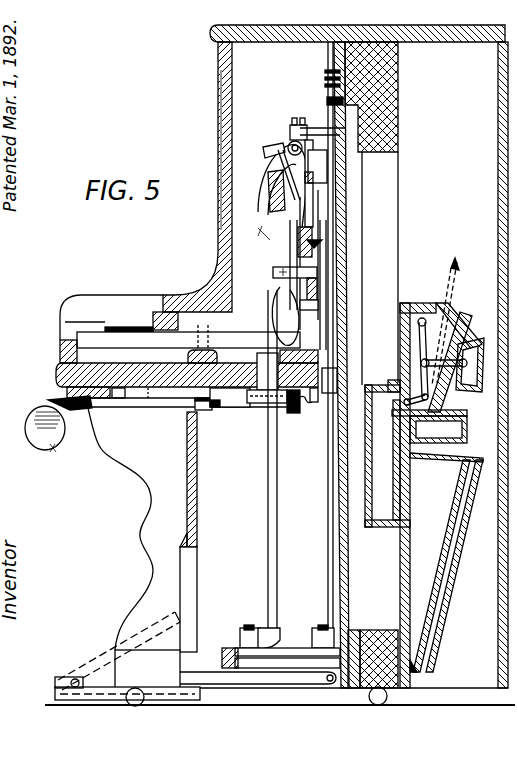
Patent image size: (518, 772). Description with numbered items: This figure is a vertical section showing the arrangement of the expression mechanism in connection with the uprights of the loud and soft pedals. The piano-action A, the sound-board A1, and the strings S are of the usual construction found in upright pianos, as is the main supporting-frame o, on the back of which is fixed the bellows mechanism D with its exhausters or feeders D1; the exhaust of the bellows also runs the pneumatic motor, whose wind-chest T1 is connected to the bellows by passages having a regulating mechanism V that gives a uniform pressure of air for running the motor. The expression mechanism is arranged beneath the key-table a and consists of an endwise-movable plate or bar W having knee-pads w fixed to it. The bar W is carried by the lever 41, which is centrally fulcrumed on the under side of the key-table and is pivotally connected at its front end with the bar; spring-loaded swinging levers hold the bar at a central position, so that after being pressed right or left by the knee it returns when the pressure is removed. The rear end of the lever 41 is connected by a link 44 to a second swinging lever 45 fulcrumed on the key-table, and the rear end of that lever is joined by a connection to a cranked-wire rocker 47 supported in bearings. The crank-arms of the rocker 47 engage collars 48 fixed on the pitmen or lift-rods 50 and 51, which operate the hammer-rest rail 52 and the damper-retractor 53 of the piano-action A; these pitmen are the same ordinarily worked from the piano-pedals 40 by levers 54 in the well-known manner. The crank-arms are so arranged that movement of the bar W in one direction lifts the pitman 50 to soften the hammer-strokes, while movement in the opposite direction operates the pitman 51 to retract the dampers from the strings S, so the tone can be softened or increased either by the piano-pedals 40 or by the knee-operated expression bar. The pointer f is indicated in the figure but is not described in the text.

The piano-pedals 40 is at (201, 659).
The lever 41 is at (160, 400).
The link 44 is at (199, 525).
The second swinging lever 45 is at (270, 397).
The cranked-wire rocker 47 is at (314, 405).
The collars 48 is at (338, 378).
The pitman or lift-rod 50 is at (268, 507).
The pitman or lift-rod 51 is at (328, 507).
The hammer-rest rail 52 is at (268, 190).
The damper-retractor 53 is at (322, 244).
The levers 54 is at (276, 630).
The bar K is at (180, 344).
The key-table a is at (187, 370).
The expression bar W is at (67, 389).
The knee-pads w is at (45, 436).
The piano-action A is at (280, 282).
The sound-board A1 is at (342, 262).
The strings S is at (322, 102).
The regulating mechanism V is at (442, 344).
The pointer f is at (446, 321).
The wind-chest of the motor T1 is at (462, 430).
The bellows mechanism D is at (446, 562).
The exhausters or feeders D1 is at (454, 566).
The main supporting-frame o is at (396, 373).